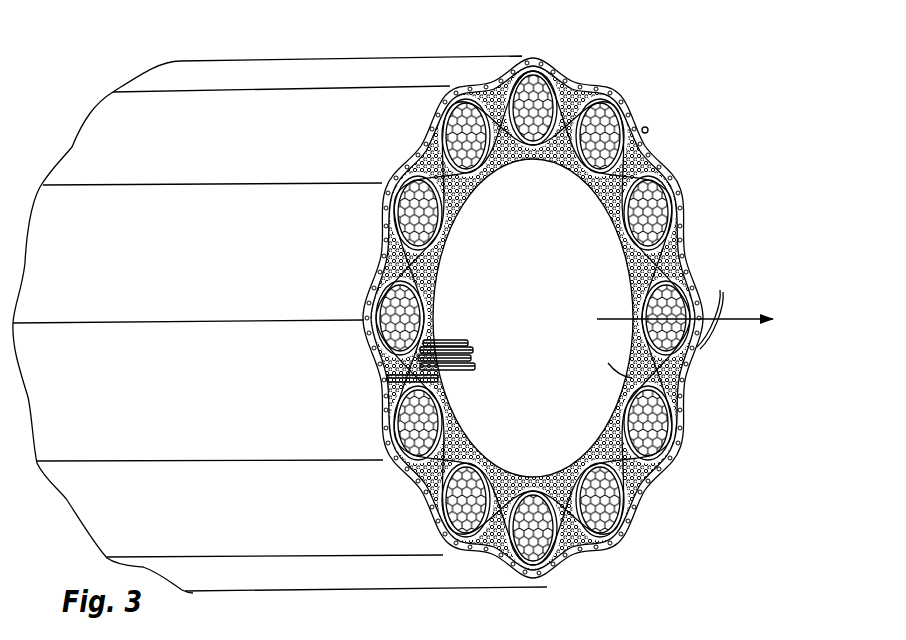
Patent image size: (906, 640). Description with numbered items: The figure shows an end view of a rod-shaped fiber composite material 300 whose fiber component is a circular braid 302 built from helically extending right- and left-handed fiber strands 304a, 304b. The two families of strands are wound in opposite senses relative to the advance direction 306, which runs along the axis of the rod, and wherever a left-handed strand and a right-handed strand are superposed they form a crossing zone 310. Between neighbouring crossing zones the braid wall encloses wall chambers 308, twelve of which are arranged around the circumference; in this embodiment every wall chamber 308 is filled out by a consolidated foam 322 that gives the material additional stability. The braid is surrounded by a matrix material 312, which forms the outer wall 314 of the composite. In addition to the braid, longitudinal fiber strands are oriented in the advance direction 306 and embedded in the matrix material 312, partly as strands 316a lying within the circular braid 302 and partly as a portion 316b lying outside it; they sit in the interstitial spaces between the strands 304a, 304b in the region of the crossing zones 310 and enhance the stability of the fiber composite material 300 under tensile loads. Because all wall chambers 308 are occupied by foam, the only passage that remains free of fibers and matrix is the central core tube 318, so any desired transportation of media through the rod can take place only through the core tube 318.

The fiber composite material 300 is at (417, 296).
The circular braid 302 is at (540, 70).
The fiber strand 304a is at (640, 118).
The fiber strand 304b is at (743, 358).
The advance direction 306 is at (755, 317).
The wall chamber 308 is at (673, 166).
The crossing zone 310 is at (690, 233).
The matrix material 312 is at (645, 130).
The outer wall 314 is at (272, 135).
The longitudinal fiber strand 316a is at (442, 342).
The longitudinal fiber strand portion 316b is at (445, 395).
The core tube 318 is at (693, 392).
The consolidated foam 322 is at (682, 193).